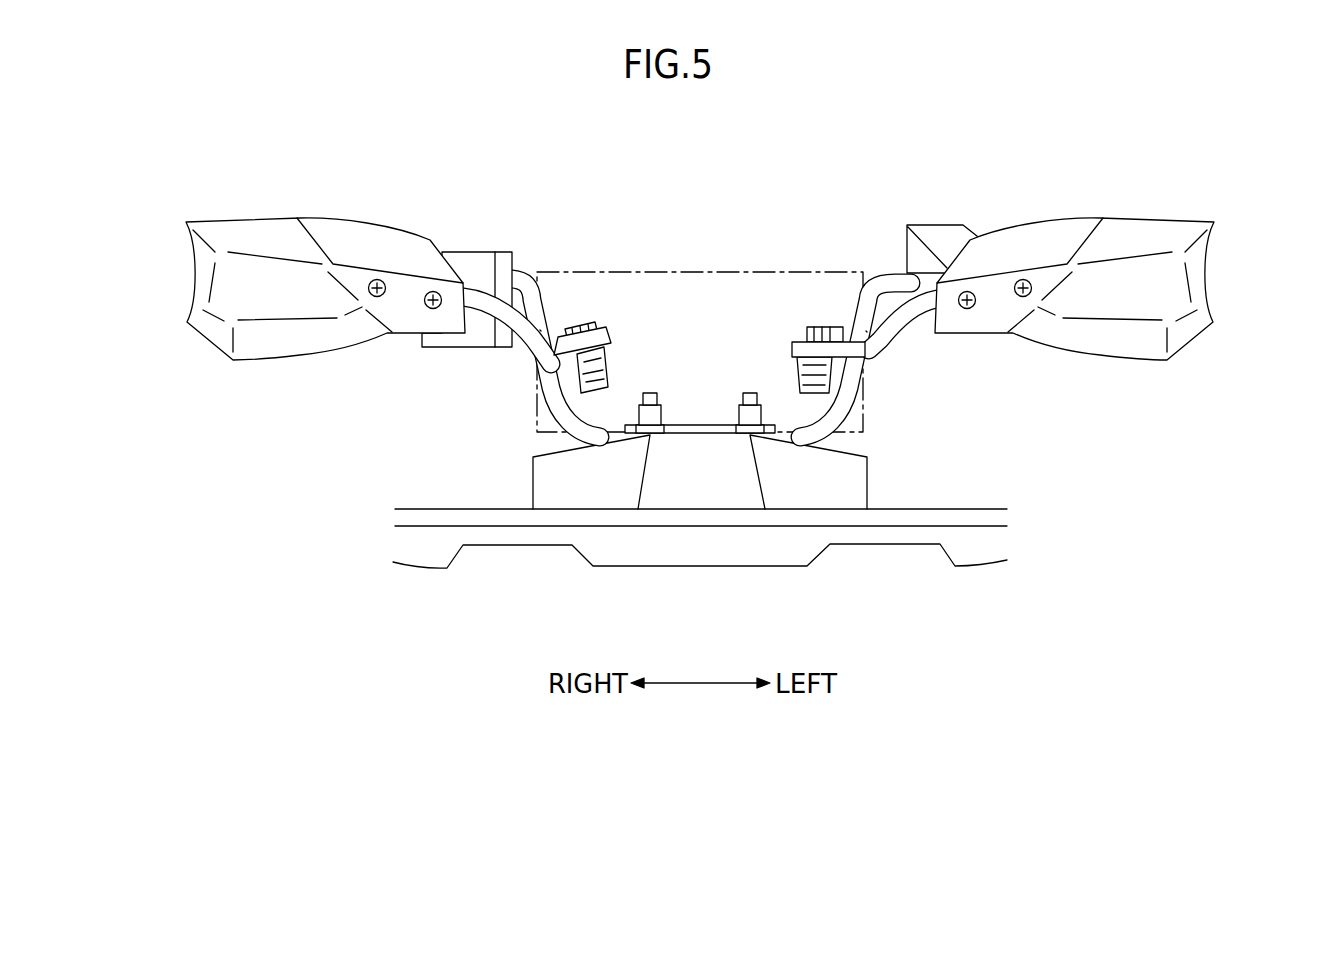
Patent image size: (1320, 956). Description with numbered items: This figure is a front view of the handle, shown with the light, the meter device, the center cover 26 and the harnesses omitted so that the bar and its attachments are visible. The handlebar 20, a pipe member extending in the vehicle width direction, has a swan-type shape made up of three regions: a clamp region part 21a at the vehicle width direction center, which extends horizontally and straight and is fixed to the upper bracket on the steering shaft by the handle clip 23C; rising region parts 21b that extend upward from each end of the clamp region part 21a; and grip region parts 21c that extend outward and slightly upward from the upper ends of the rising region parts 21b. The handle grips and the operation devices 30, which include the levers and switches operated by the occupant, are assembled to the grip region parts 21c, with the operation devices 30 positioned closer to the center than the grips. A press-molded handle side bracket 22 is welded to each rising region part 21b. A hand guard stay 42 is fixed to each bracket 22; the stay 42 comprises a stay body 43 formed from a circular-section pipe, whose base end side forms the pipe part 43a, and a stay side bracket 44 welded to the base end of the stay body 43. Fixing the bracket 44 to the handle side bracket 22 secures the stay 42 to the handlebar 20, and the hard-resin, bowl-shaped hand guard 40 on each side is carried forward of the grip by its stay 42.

The handlebar 20 is at (702, 396).
The clamp region part 21a is at (783, 437).
The rising region part 21b is at (702, 292).
The grip region part 21c is at (897, 283).
The bracket 22 is at (608, 387).
The handle clip 23C is at (742, 413).
The center cover 26 is at (678, 268).
The operation device 30 is at (476, 243).
The hand guard 40 is at (252, 245).
The hand guard stay 42 is at (520, 313).
The stay body 43 is at (706, 344).
The pipe part 43a is at (545, 352).
The bracket 44 is at (594, 330).